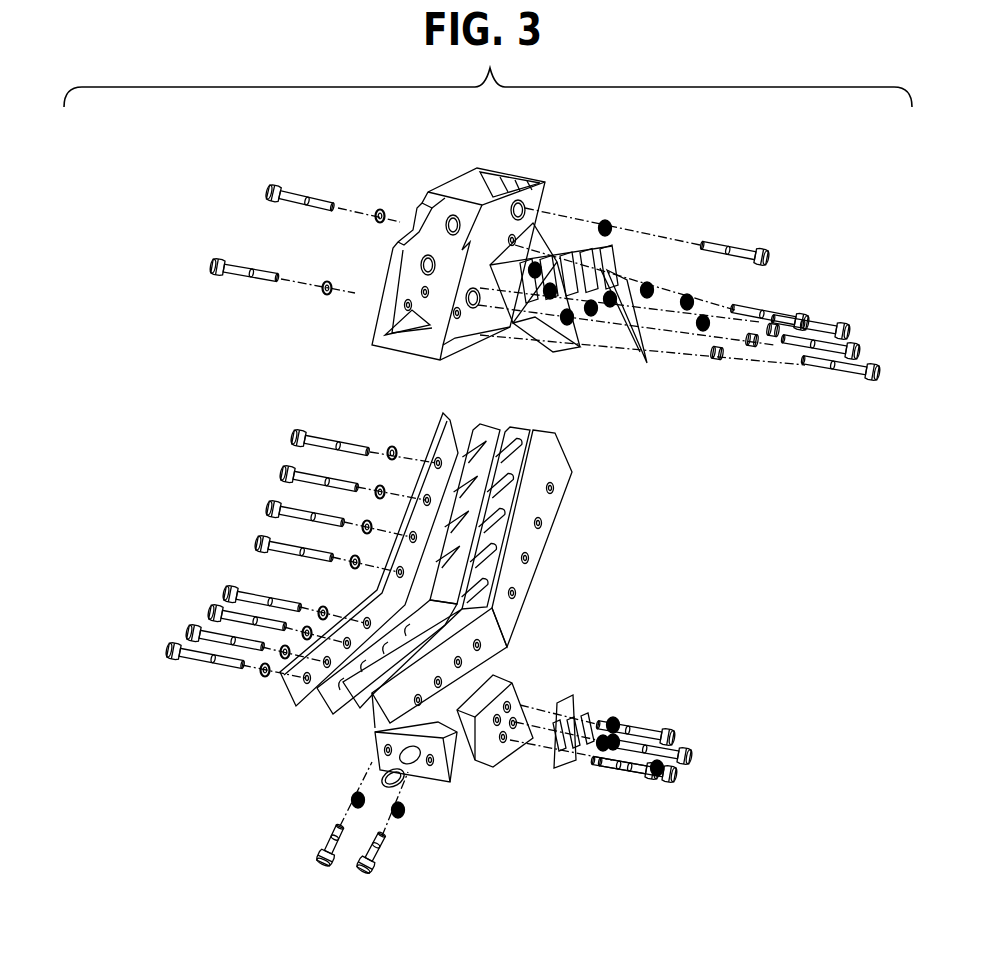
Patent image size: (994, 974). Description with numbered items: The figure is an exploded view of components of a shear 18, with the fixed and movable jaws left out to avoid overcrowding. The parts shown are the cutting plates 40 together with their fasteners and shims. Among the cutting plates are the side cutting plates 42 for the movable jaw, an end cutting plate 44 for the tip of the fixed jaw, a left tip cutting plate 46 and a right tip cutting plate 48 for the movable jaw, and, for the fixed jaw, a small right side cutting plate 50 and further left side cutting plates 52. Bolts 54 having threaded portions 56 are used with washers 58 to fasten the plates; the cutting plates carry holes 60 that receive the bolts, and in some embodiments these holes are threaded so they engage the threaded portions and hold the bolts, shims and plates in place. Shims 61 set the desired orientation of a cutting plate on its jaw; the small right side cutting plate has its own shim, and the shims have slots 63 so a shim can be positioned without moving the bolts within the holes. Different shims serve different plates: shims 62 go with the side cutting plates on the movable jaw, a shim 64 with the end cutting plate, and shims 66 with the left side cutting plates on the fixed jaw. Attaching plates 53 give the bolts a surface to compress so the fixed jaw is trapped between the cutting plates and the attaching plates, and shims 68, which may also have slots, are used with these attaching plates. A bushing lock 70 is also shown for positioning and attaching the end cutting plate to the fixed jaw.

The shear 18 is at (126, 207).
The cutting plates 40 is at (446, 172).
The side cutting plates 42 is at (580, 325).
The end cutting plate 44 is at (458, 762).
The left tip cutting plate 46 is at (385, 315).
The right tip cutting plate 48 is at (455, 342).
The small right side cutting plate 50 is at (494, 579).
The left side cutting plates 52 is at (565, 482).
The attaching plates 53 is at (437, 445).
The bolts 54 is at (288, 186).
The threaded portions 56 is at (315, 207).
The washers 58 is at (378, 208).
The holes 60 is at (528, 208).
The shims 61 is at (630, 374).
The shims 62 is at (530, 332).
The slots 63 is at (618, 268).
The shim 64 is at (588, 707).
The shims 66 is at (513, 470).
The shims 68 is at (480, 428).
The bushing lock 70 is at (415, 790).